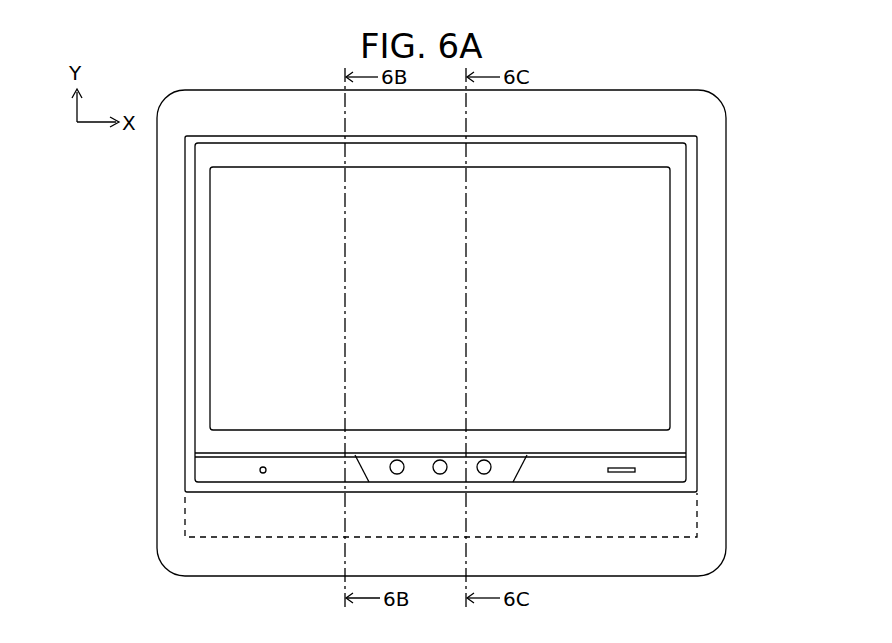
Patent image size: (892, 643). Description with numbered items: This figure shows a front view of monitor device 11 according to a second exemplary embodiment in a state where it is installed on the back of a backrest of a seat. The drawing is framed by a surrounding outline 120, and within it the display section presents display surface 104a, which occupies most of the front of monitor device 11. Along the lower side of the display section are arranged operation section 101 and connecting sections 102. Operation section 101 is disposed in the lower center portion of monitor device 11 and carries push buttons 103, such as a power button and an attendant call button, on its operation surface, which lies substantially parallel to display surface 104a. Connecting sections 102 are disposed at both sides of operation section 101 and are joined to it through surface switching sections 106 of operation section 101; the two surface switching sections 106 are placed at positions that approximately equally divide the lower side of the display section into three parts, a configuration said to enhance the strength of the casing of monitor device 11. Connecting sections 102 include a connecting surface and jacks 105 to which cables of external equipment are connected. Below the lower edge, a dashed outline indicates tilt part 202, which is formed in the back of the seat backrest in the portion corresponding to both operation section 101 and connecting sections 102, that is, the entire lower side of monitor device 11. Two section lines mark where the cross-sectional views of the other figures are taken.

The monitor device 11 is at (593, 141).
The housing 120 is at (157, 193).
The operation section 101 is at (498, 465).
The connecting section 102 is at (277, 468).
The push button 103 is at (398, 458).
The display surface 104a is at (243, 311).
The jack 105 is at (259, 470).
The surface switching section 106 is at (374, 482).
The tilt part 202 is at (185, 515).